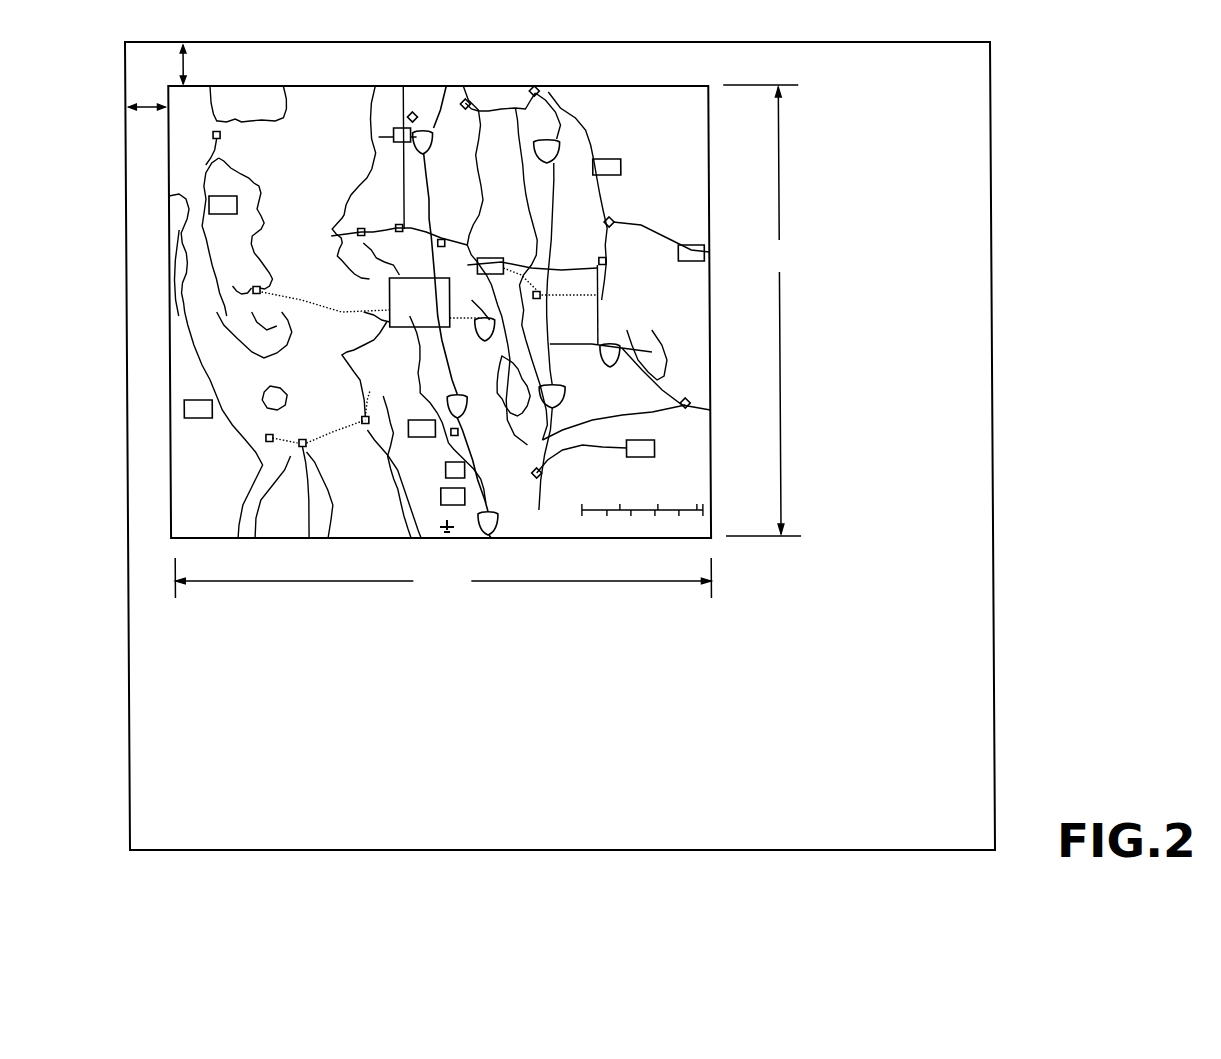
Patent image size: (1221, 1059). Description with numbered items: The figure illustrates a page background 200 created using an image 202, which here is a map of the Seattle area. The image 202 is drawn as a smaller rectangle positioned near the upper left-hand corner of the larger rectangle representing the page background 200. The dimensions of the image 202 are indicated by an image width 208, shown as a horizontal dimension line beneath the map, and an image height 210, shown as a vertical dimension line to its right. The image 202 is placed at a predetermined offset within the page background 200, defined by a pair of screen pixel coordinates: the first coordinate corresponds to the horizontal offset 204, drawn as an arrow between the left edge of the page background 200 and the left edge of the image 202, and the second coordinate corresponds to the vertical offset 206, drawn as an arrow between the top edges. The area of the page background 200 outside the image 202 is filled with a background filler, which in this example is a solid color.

The page background 200 is at (438, 42).
The image 202 is at (708, 182).
The horizontal offset 204 is at (125, 110).
The vertical offset 206 is at (194, 43).
The image width 208 is at (443, 578).
The image height 210 is at (765, 310).